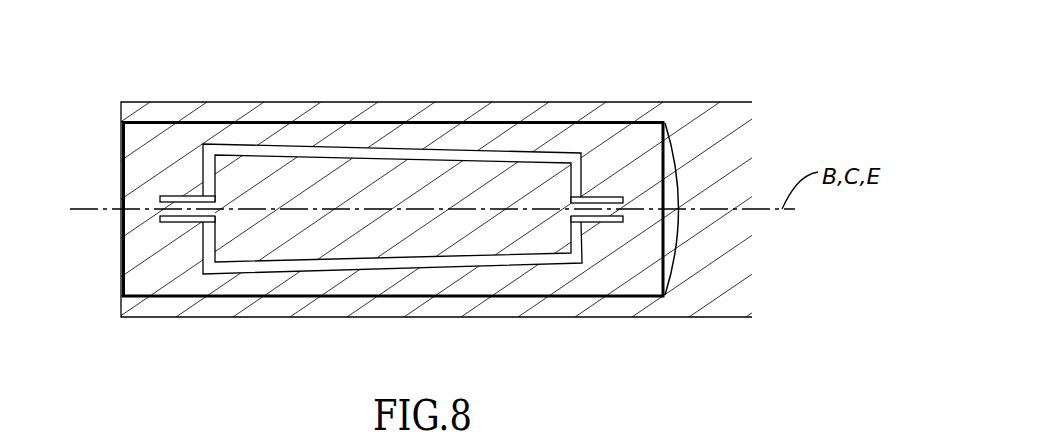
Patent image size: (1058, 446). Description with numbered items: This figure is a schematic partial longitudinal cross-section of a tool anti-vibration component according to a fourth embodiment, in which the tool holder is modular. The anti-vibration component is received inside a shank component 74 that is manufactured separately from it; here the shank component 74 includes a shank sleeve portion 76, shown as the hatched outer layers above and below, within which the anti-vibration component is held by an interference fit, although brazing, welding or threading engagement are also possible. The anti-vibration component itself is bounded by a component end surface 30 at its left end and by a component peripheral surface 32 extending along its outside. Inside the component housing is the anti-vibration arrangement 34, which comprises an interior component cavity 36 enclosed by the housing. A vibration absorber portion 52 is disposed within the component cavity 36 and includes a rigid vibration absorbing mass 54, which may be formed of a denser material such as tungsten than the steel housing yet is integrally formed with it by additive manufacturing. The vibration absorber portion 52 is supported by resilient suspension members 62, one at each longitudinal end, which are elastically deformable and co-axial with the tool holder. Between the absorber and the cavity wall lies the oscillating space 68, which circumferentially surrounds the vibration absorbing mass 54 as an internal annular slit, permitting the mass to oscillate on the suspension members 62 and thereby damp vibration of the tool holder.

The component end surface 30 is at (121, 176).
The component peripheral surface 32 is at (571, 121).
The anti-vibration arrangement 34 is at (488, 142).
The interior component cavity 36 is at (312, 152).
The vibration absorber portion 52 is at (343, 178).
The vibration absorbing mass 54 is at (372, 180).
The resilient suspension member 62 is at (177, 213).
The oscillating space 68 is at (480, 260).
The shank component 74 is at (172, 99).
The shank sleeve portion 76 is at (195, 110).